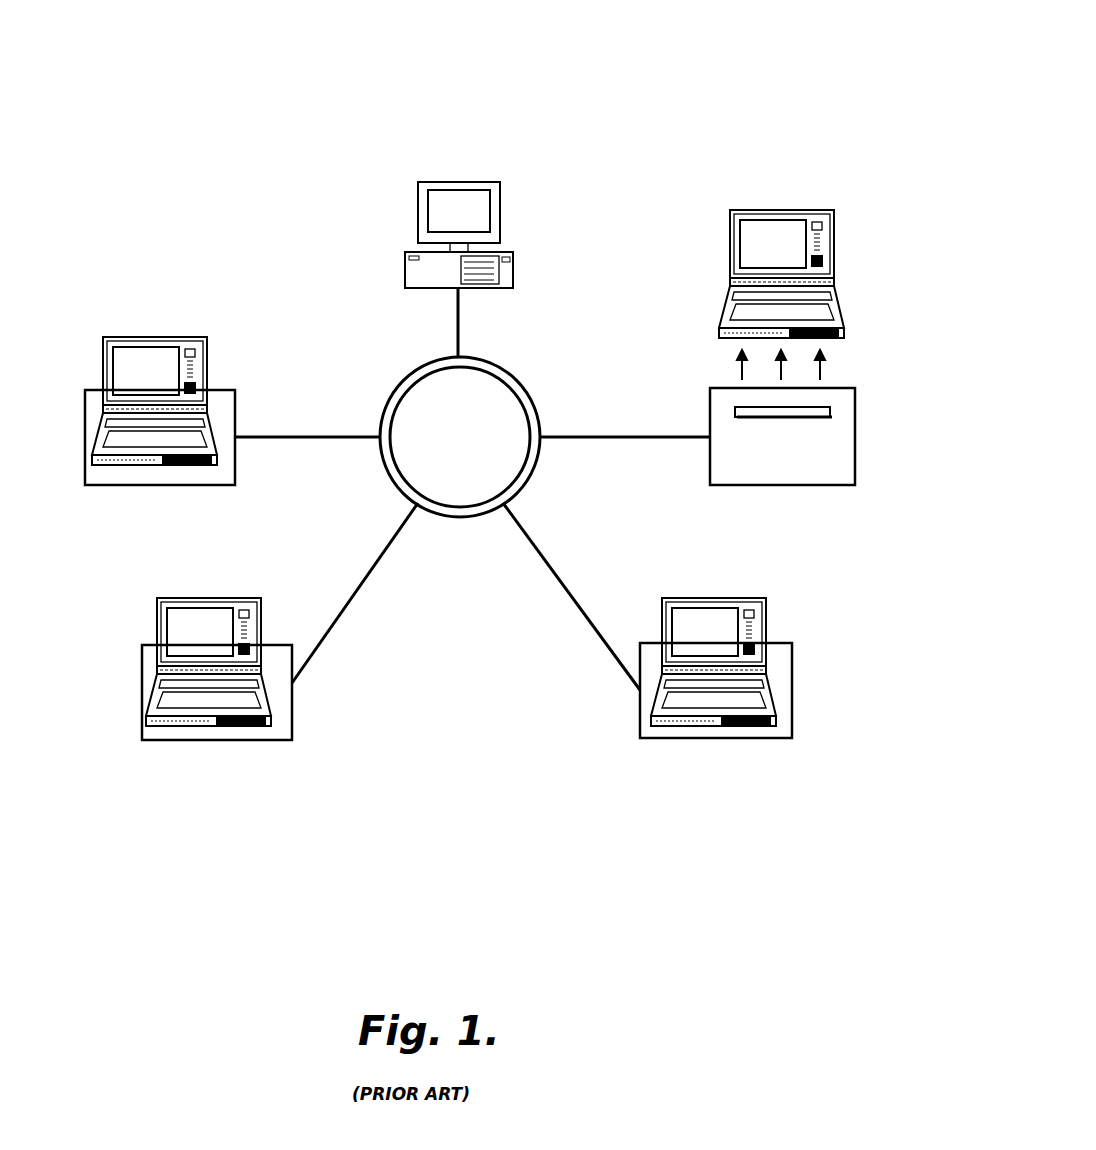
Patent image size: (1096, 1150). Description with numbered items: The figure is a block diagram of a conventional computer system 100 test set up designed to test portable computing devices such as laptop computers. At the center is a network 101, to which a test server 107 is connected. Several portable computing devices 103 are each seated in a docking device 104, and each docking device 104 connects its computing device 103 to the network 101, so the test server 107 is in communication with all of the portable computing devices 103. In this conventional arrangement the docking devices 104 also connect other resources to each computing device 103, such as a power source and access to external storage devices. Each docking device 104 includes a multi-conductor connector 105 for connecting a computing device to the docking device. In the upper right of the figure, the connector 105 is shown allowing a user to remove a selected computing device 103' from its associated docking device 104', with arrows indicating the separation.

The computer system 100 is at (676, 83).
The network 101 is at (528, 395).
The portable computing device 103 is at (186, 398).
The selected computing device 103' is at (815, 274).
The docking device 104 is at (126, 437).
The associated docking device 104' is at (819, 417).
The multi-conductor connector 105 is at (830, 410).
The test server 107 is at (500, 236).